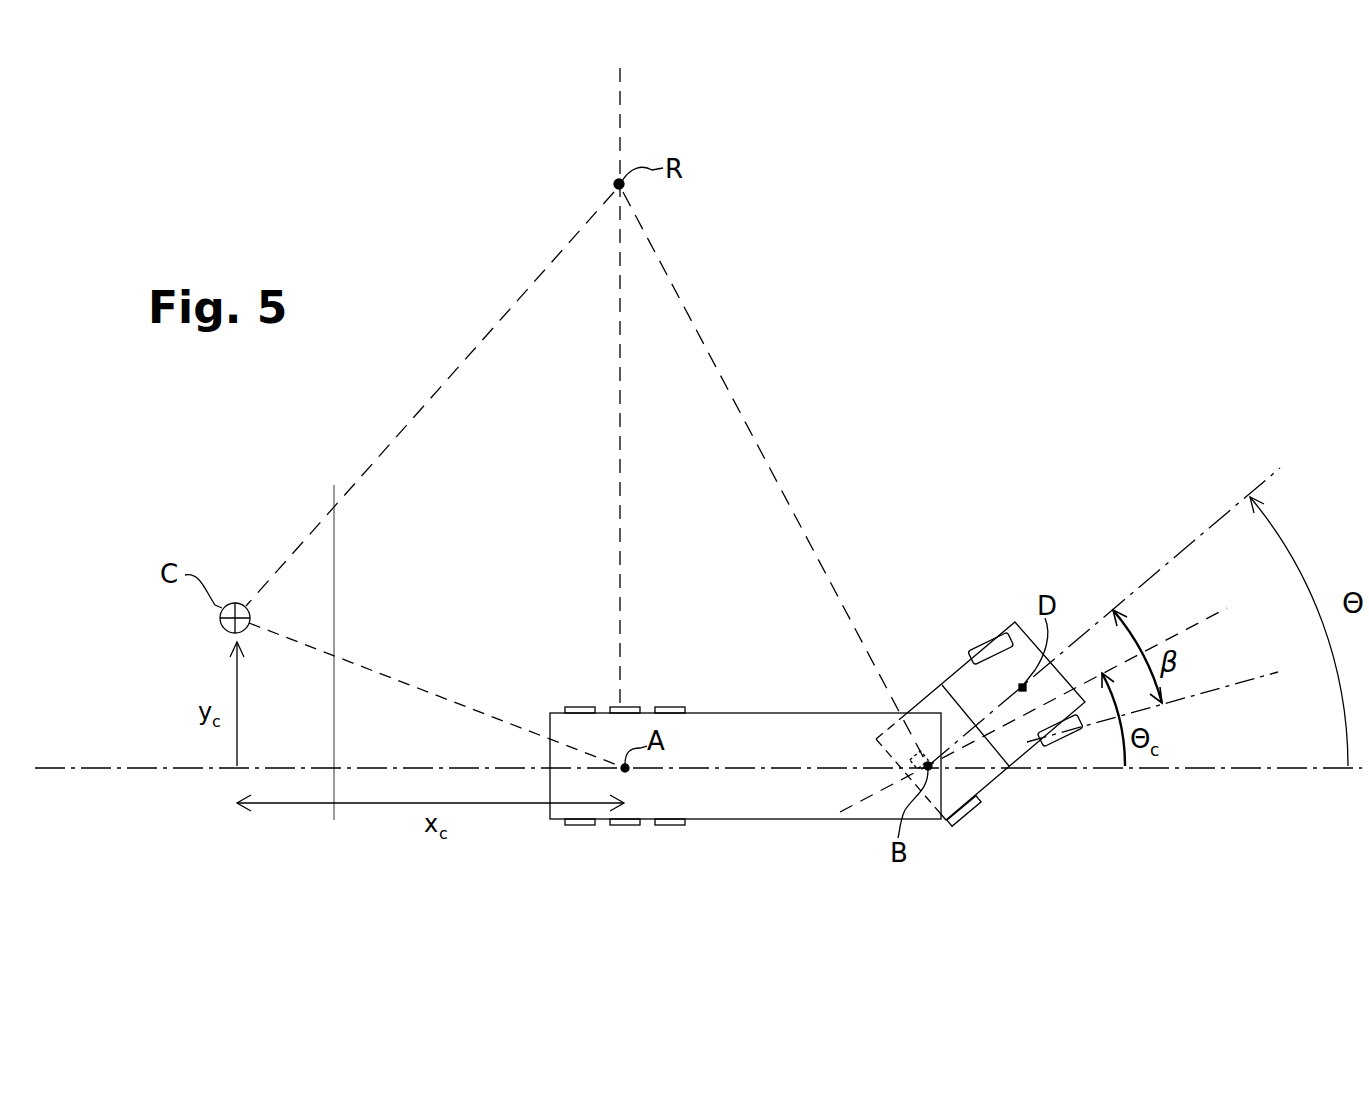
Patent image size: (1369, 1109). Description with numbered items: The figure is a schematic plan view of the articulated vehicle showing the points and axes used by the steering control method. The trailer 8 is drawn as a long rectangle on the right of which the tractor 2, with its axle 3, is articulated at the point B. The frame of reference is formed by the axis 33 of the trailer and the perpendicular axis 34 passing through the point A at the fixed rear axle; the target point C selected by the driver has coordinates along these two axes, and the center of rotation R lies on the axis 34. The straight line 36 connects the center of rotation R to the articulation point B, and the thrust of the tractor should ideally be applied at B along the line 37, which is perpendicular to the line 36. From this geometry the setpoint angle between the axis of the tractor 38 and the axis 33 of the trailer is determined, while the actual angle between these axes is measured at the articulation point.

The tractor 2 is at (950, 665).
The axle 3 is at (986, 638).
The trailer 8 is at (853, 820).
The axis of the trailer 33 is at (733, 768).
The perpendicular axis 34 is at (624, 563).
The straight line 36 is at (774, 470).
The thrust line 37 is at (1198, 618).
The axis of the tractor 38 is at (1160, 567).